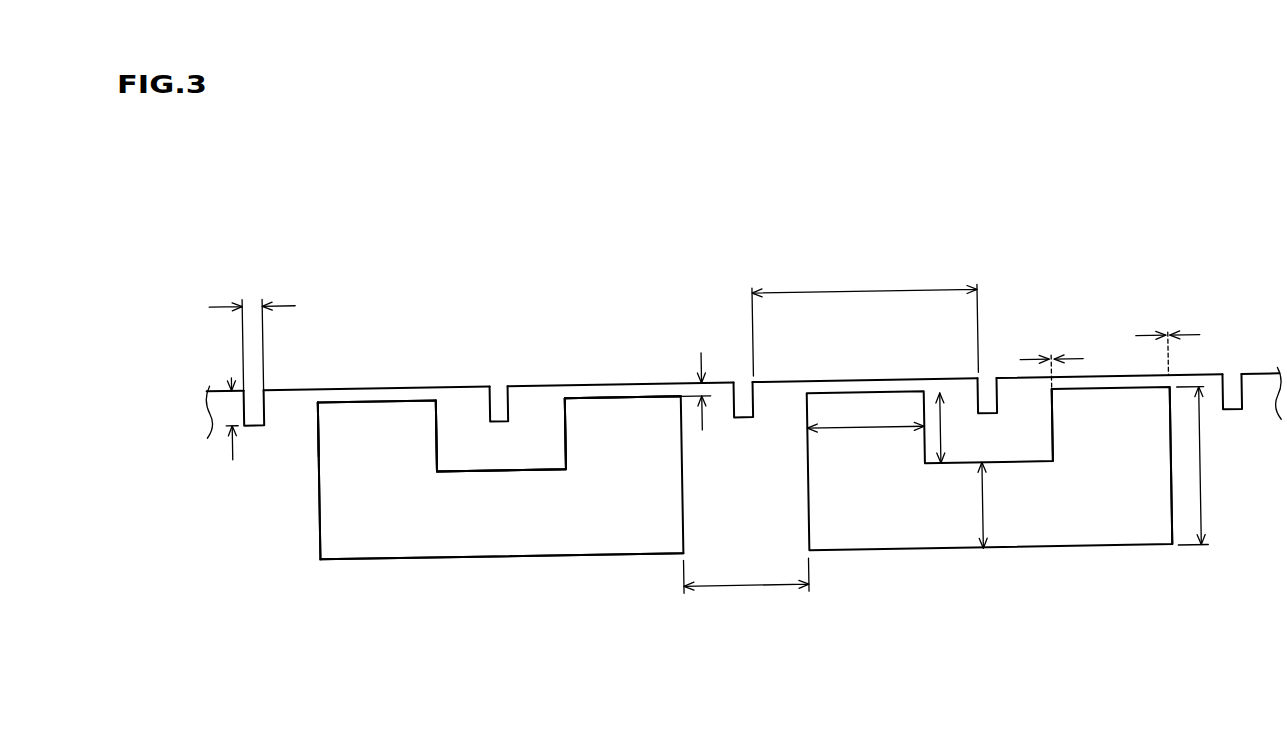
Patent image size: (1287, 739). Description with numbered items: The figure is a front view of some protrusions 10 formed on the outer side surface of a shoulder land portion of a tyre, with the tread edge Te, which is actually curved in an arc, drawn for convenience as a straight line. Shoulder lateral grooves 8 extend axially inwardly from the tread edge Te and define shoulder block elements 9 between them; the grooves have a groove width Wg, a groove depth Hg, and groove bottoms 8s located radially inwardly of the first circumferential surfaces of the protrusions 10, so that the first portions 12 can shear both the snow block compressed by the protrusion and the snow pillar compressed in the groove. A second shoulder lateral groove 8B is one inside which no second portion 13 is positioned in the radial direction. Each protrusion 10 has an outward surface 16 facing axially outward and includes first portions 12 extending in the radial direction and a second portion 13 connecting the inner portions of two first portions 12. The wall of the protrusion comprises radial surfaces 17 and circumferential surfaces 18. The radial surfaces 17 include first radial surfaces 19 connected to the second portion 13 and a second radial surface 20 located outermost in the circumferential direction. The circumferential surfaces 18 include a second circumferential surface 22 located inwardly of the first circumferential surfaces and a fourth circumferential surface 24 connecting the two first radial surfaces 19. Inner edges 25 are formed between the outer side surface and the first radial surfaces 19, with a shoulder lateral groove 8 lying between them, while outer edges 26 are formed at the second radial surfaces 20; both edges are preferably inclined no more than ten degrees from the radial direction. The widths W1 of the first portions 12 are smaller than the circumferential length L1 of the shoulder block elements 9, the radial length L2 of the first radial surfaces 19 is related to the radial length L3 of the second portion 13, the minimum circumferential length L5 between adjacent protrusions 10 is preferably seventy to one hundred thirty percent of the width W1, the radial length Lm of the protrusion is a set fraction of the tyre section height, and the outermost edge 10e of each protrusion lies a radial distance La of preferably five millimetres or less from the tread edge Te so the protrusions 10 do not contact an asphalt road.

The shoulder lateral groove 8 is at (986, 397).
The second shoulder lateral groove 8B is at (256, 397).
The groove bottom 8s is at (503, 414).
The shoulder block element 9 is at (669, 381).
The protrusion 10 is at (572, 523).
The outermost edge 10e is at (616, 396).
The first portion 12 is at (388, 511).
The second portion 13 is at (520, 514).
The outward surface 16 is at (339, 500).
The radial surface 17 is at (438, 433).
The circumferential surface 18 is at (374, 396).
The first radial surface 19 is at (566, 435).
The second radial surface 20 is at (317, 447).
The second circumferential surface 22 is at (346, 554).
The fourth circumferential surface 24 is at (523, 465).
The inner edge 25 is at (1053, 418).
The outer edge 26 is at (1172, 478).
The tread edge Te is at (219, 384).
The groove width Wg is at (237, 330).
The groove depth Hg is at (233, 400).
The radial distance La is at (704, 390).
The circumferential length L1 is at (865, 317).
The width W1 is at (863, 428).
The radial length L2 is at (942, 466).
The radial length L3 is at (982, 512).
The circumferential length L5 is at (747, 588).
The radial length Lm is at (1210, 465).